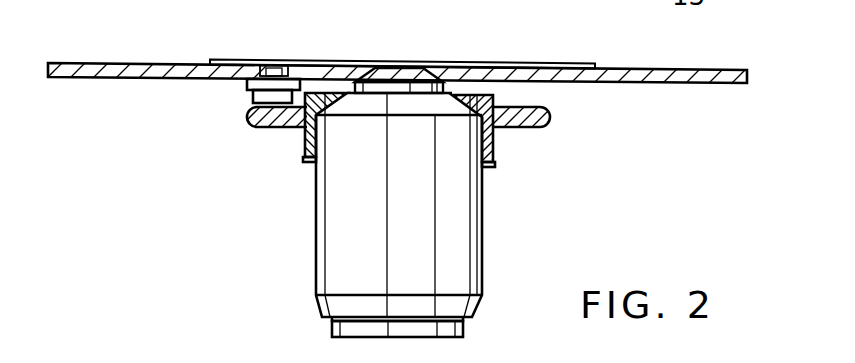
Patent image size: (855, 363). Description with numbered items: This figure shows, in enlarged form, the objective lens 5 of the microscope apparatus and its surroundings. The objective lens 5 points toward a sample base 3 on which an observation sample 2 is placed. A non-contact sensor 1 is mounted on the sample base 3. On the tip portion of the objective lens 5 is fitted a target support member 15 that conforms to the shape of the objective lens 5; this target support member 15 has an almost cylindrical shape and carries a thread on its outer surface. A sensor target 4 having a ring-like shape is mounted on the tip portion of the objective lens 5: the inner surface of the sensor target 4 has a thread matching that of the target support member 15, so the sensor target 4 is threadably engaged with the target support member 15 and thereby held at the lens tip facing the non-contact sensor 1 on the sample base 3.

The non-contact sensor 1 is at (250, 97).
The observation sample 2 is at (304, 59).
The sample base 3 is at (120, 63).
The sensor target 4 is at (258, 127).
The objective lens 5 is at (470, 182).
The target support member 15 is at (483, 100).